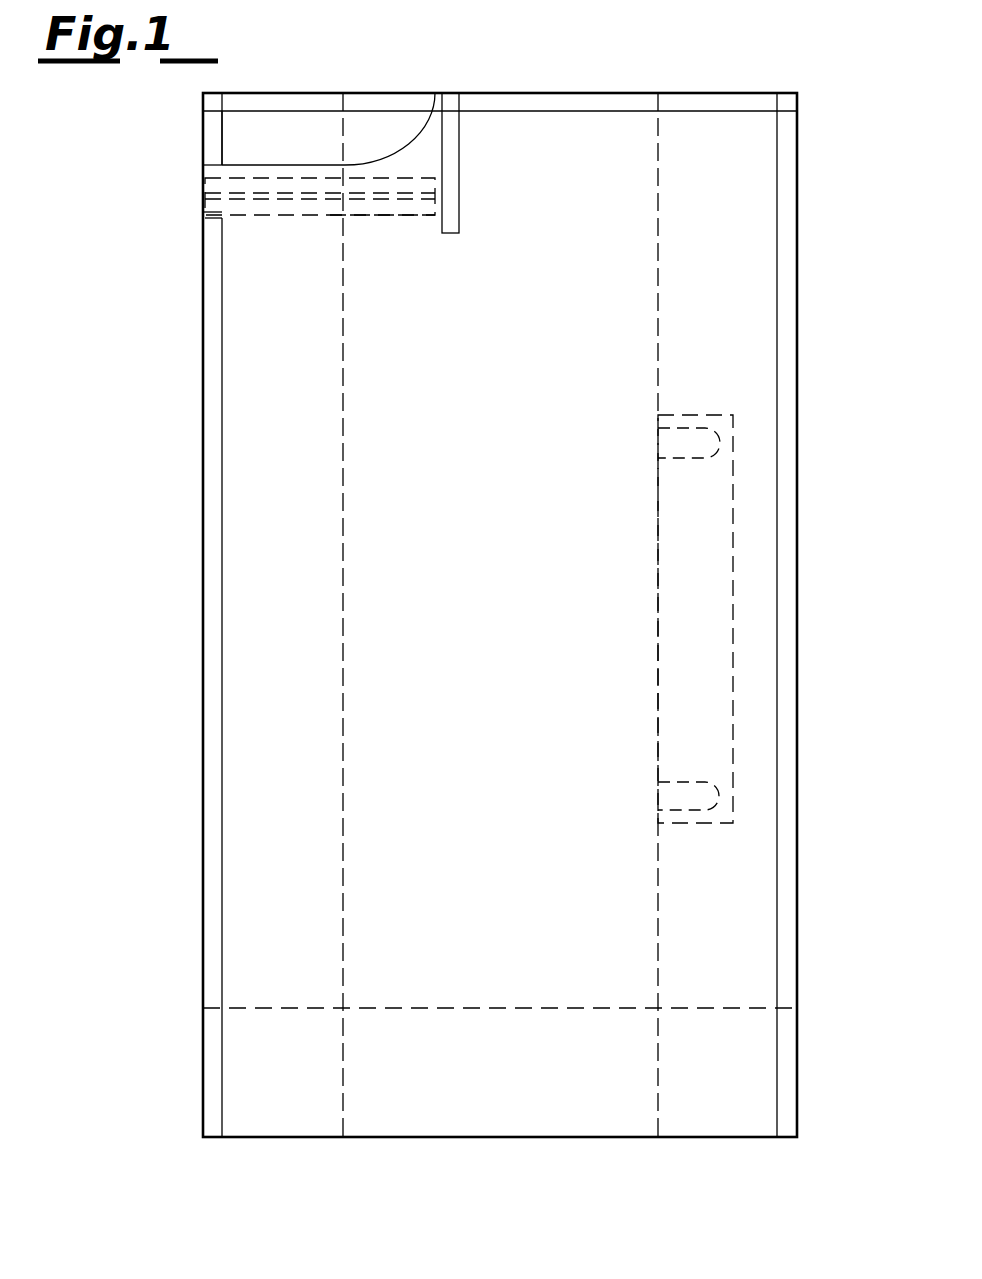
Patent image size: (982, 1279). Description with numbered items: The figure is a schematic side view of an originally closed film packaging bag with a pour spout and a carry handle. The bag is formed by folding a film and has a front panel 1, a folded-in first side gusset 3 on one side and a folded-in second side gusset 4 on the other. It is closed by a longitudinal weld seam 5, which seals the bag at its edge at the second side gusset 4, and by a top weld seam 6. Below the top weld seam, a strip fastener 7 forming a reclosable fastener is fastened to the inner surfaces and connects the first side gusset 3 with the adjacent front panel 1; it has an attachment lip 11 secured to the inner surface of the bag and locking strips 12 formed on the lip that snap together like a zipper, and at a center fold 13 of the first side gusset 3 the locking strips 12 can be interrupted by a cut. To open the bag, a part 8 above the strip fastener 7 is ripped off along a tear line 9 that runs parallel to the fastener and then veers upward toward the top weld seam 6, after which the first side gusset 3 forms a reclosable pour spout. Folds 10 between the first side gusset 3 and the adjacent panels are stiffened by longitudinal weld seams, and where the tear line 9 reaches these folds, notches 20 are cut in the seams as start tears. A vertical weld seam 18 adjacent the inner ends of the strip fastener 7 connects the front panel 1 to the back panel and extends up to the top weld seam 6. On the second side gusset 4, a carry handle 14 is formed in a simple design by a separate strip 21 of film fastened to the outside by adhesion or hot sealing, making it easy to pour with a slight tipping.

The front panel 1 is at (473, 690).
The first side gusset 3 is at (343, 383).
The second side gusset 4 is at (658, 380).
The longitudinal weld seam 5 is at (785, 176).
The top weld seam 6 is at (717, 103).
The strip fastener 7 is at (218, 207).
The part of the bag 8 is at (238, 135).
The tear line 9 is at (400, 141).
The folds 10 is at (202, 323).
The attachment lip 11 is at (257, 212).
The locking strips 12 is at (288, 195).
The center fold 13 is at (348, 208).
The carry handle 14 is at (735, 788).
The vertical weld seam 18 is at (450, 145).
The notches 20 is at (209, 164).
The separate strip 21 is at (730, 688).